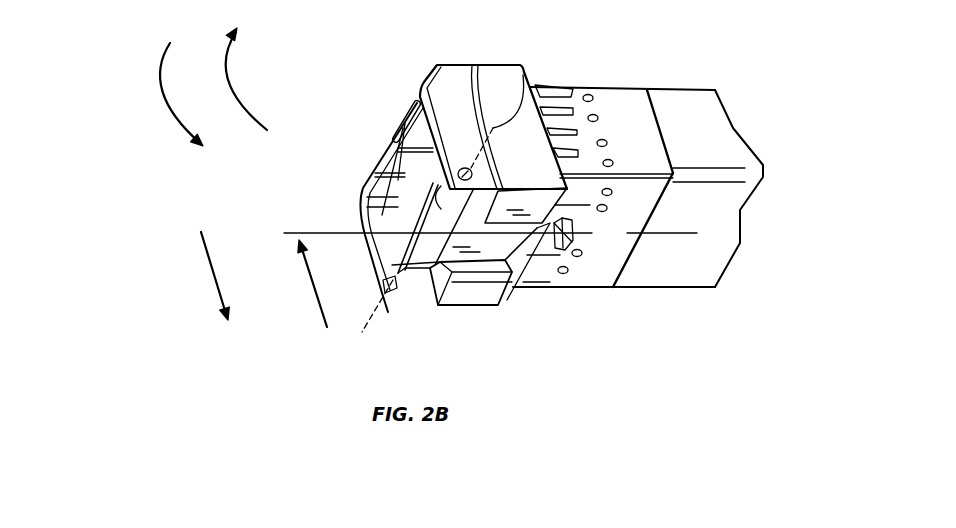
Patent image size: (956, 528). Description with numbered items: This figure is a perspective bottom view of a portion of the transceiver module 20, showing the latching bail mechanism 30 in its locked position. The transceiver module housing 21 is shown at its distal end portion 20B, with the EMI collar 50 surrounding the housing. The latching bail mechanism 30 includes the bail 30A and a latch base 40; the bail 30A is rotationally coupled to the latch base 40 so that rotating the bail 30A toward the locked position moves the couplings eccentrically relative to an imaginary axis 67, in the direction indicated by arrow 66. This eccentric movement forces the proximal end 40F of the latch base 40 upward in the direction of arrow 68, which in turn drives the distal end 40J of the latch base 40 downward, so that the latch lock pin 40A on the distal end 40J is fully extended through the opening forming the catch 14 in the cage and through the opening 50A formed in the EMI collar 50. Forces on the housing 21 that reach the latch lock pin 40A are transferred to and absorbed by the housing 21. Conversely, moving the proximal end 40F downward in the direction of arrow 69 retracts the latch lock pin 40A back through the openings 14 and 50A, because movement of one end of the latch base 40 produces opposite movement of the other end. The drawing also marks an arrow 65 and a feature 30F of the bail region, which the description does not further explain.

The catch 14 is at (574, 233).
The transceiver module 20 is at (758, 84).
The distal end portion 20B is at (499, 64).
The transceiver module housing 21 is at (695, 97).
The latching bail mechanism 30 is at (446, 50).
The bail 30A is at (433, 88).
The tab of cover 30F is at (394, 133).
The latch base 40 is at (388, 298).
The latch lock pin 40A is at (467, 236).
The proximal end of latch base 40F is at (418, 265).
The distal end of latch base 40J is at (506, 243).
The EMI collar 50 is at (614, 98).
The opening in EMI collar 50A is at (565, 248).
The rotational direction 65 is at (167, 111).
The arrow 66 is at (235, 87).
The imaginary axis 67 is at (525, 80).
The arrow 68 is at (313, 302).
The arrow 69 is at (210, 272).